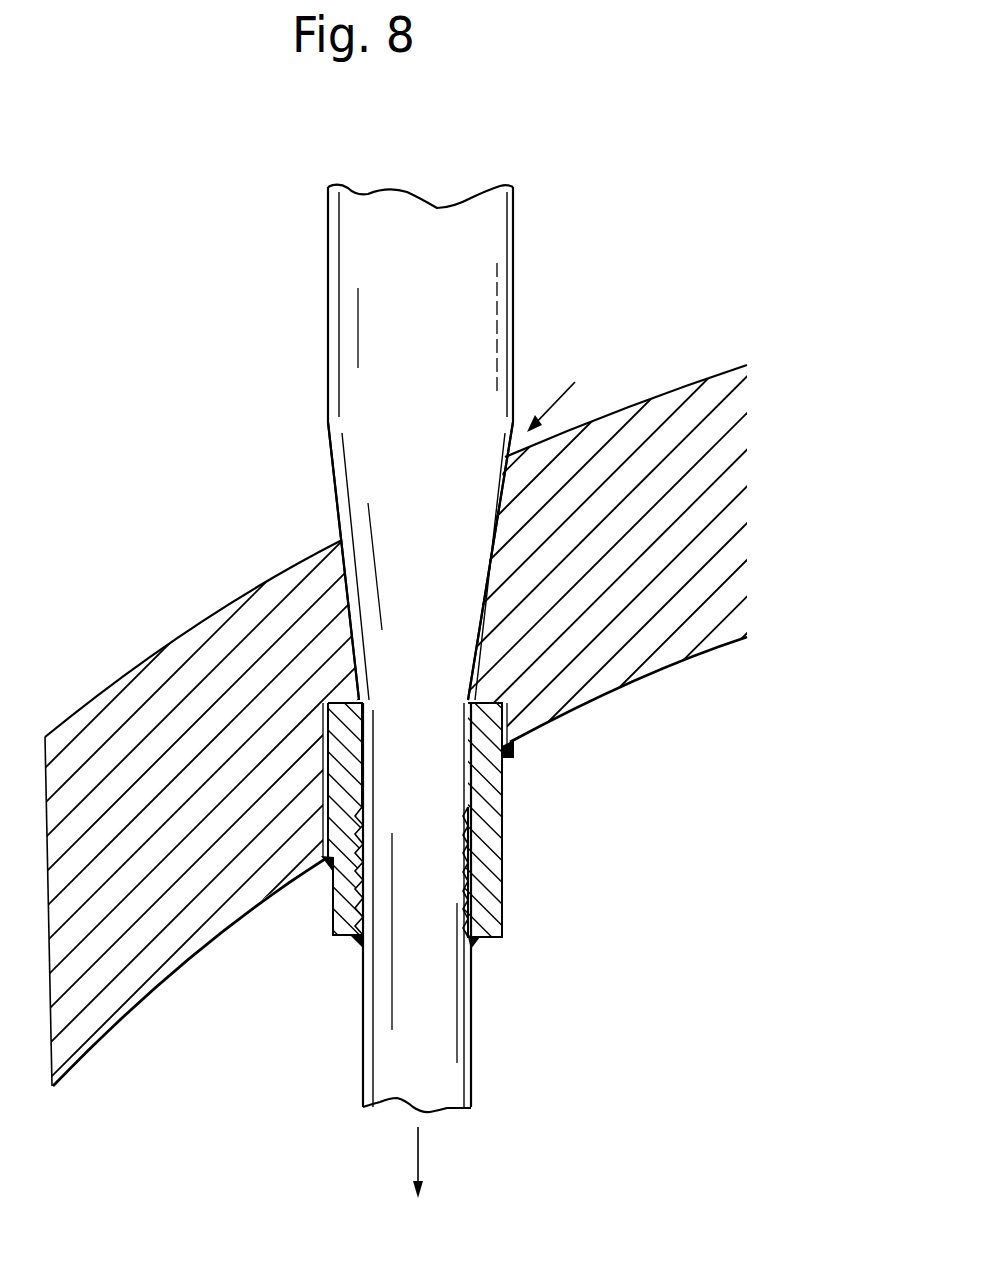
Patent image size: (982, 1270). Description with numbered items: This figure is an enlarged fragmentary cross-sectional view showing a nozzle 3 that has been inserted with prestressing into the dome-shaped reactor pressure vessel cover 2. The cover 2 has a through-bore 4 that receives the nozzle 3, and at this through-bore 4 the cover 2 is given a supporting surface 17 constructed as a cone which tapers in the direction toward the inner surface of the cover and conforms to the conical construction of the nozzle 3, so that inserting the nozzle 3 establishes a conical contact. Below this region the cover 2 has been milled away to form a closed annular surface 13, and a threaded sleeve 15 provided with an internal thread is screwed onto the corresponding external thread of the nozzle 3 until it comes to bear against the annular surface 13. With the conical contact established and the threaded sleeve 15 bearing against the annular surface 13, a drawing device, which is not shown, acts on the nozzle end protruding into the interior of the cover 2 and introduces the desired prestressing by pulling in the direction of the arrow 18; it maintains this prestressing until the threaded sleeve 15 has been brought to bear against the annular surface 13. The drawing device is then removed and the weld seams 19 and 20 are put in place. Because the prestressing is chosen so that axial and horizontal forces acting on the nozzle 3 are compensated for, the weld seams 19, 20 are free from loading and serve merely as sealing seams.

The reactor pressure vessel cover 2 is at (122, 997).
The nozzle 3 is at (478, 293).
The through-bore 4 is at (558, 397).
The annular surface 13 is at (513, 710).
The threaded sleeve 15 is at (490, 810).
The supporting surface 17 is at (485, 582).
The arrow 18 is at (408, 1147).
The weld seam 19 is at (323, 870).
The weld seam 20 is at (350, 948).